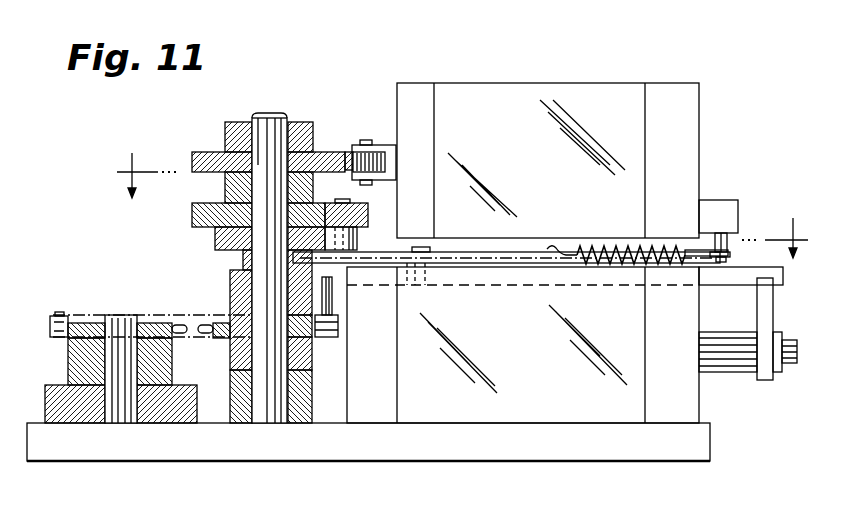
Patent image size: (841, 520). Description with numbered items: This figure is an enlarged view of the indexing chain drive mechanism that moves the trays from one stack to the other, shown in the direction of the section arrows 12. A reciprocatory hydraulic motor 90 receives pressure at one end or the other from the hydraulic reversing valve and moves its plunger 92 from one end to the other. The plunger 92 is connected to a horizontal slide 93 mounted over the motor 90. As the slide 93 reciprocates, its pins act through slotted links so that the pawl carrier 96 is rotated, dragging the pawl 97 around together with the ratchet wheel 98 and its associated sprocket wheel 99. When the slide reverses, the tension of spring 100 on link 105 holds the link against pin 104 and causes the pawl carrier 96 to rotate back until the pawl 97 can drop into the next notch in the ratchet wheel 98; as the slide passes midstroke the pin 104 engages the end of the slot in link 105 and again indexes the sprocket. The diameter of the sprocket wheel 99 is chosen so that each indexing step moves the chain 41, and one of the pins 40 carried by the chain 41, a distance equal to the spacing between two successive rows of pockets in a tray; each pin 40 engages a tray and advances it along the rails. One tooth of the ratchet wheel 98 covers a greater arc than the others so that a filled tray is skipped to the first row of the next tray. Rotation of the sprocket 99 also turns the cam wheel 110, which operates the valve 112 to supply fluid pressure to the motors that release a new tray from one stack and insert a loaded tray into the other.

The section line 12- 12 is at (460, 214).
The pin 40 is at (330, 295).
The chain 41 is at (158, 313).
The reciprocatory hydraulic motor 90 is at (507, 408).
The plunger 92 is at (730, 363).
The horizontal slide 93 is at (491, 275).
The pawl carrier 96 is at (357, 235).
The pawl 97 is at (367, 210).
The ratchet wheel 98 is at (192, 214).
The sprocket wheel 99 is at (217, 323).
The spring 100 is at (610, 243).
The pin 104 is at (425, 247).
The link 105 is at (470, 260).
The cam wheel 110 is at (228, 126).
The valve 112 is at (550, 90).